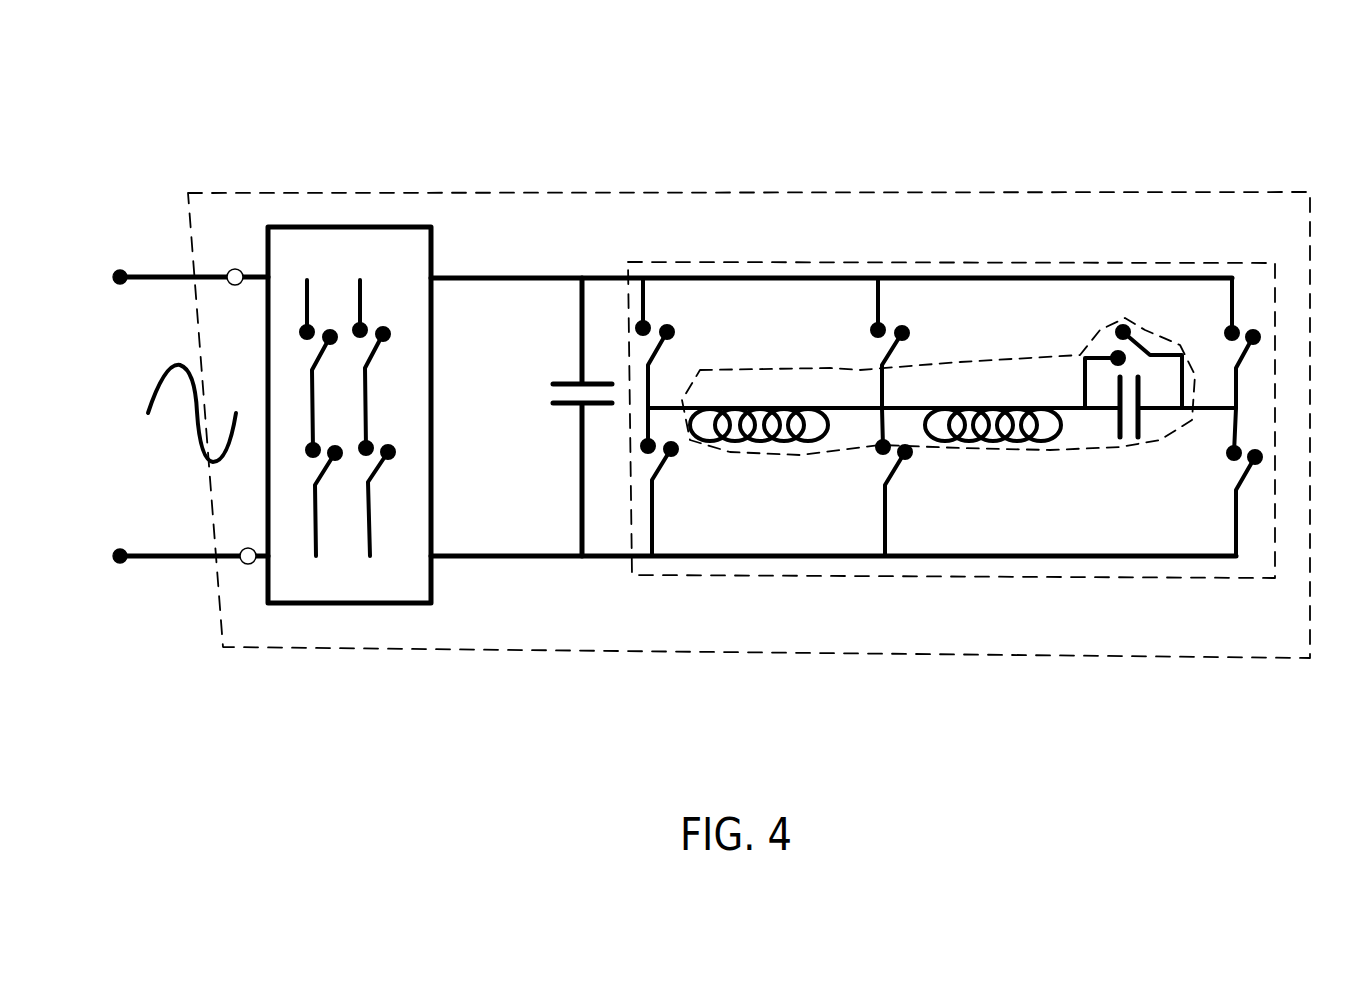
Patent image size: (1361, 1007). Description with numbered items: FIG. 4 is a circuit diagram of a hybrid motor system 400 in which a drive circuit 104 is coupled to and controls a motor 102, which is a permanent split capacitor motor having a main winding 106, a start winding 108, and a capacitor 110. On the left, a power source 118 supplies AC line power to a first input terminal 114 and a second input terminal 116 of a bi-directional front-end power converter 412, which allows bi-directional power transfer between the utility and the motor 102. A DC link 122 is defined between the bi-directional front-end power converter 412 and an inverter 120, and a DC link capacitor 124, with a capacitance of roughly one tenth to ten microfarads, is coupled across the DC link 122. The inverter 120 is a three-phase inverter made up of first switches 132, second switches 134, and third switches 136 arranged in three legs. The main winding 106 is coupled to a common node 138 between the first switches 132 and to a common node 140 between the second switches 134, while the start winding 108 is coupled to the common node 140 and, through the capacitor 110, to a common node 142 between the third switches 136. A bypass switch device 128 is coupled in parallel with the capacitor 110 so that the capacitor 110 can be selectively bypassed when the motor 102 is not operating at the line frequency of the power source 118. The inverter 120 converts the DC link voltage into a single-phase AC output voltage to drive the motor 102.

The hybrid motor system 400 is at (245, 52).
The drive circuit 104 is at (1100, 192).
The inverter 120 is at (1105, 262).
The power source 118 is at (112, 396).
The first input terminal 114 is at (235, 268).
The second input terminal 116 is at (250, 565).
The bi-directional front-end power converter 412 is at (332, 227).
The DC link 122 is at (463, 277).
The DC link capacitor 124 is at (560, 382).
The first switches 132 is at (669, 330).
The common node between first switches 138 is at (655, 405).
The motor 102 is at (852, 368).
The main winding 106 is at (790, 445).
The second switches 134 is at (902, 333).
The common node between second switches 140 is at (888, 395).
The start winding 108 is at (1032, 447).
The capacitor 110 is at (1115, 437).
The bypass switch device 128 is at (1130, 333).
The common node between third switches 142 is at (1236, 407).
The third switches 136 is at (1258, 335).